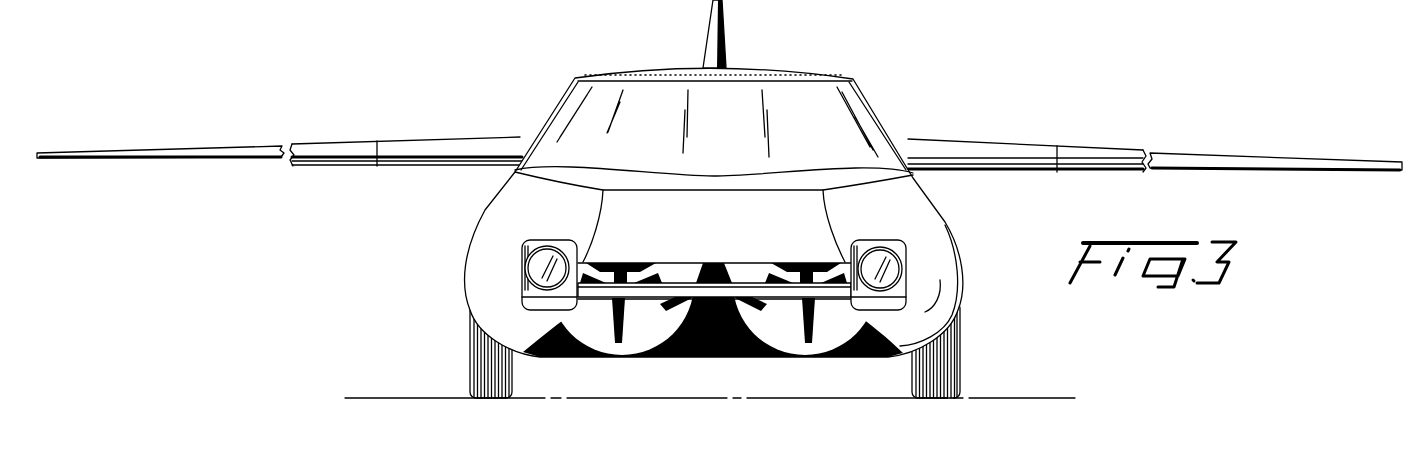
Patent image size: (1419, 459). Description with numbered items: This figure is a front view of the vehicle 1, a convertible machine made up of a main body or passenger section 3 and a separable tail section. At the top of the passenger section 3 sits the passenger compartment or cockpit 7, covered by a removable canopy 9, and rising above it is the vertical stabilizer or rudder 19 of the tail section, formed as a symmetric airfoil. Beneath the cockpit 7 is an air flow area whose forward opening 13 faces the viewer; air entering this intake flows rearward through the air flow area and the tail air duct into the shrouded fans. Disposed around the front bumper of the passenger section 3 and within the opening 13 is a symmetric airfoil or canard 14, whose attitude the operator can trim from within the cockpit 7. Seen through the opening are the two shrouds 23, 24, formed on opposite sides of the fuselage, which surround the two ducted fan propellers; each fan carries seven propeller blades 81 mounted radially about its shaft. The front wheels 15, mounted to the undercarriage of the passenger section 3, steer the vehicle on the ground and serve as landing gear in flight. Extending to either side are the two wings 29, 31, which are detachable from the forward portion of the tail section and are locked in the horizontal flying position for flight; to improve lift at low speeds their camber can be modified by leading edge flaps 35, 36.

The vehicle 1 is at (719, 224).
The passenger section 3 is at (783, 238).
The cockpit 7 is at (793, 97).
The canopy 9 is at (645, 68).
The forward opening 13 is at (713, 330).
The canard 14 is at (671, 289).
The front wheels 15 is at (470, 373).
The vertical stabilizer 19 is at (723, 35).
The shroud 23 is at (660, 355).
The shroud 24 is at (775, 353).
The wing 29 is at (294, 118).
The wing 31 is at (1163, 115).
The leading edge flap 35 is at (313, 158).
The leading edge flap 36 is at (1165, 168).
The propeller blades 81 is at (592, 350).